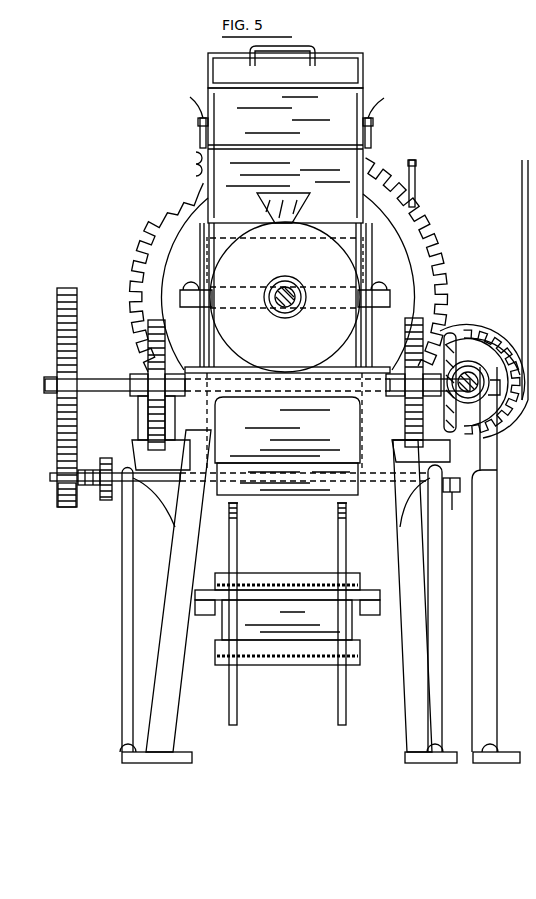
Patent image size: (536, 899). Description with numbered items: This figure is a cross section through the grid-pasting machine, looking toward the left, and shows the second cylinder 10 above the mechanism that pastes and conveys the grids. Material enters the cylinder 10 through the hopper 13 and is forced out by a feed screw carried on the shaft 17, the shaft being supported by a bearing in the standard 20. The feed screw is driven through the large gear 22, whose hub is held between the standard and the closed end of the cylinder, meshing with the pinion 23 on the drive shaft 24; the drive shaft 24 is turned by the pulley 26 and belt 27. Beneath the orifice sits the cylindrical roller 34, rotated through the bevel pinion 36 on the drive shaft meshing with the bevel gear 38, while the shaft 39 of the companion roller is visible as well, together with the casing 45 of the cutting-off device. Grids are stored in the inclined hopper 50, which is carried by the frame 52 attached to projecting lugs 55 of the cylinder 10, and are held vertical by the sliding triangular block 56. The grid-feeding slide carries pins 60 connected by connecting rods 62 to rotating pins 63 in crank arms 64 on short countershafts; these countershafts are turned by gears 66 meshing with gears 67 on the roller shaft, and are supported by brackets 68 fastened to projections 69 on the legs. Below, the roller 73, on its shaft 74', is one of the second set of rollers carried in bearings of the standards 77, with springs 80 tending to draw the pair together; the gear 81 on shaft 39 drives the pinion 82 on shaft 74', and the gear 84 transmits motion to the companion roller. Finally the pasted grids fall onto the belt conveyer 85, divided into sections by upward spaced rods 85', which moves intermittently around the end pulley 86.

The second cylinder 10 is at (285, 297).
The hopper 13 is at (300, 206).
The shaft 17 is at (292, 288).
The standard 20 is at (497, 538).
The large gear 22 is at (160, 215).
The pinion 23 is at (470, 330).
The drive shaft 24 is at (476, 390).
The pulley 26 is at (489, 328).
The belt 27 is at (417, 170).
The cylindrical roller 34 is at (287, 430).
The bevel pinion 36 is at (472, 372).
The bevel gear 38 is at (457, 408).
The shaft 39 is at (45, 385).
The casing 45 is at (213, 258).
The inclined hopper 50 is at (285, 155).
The frame 52 is at (196, 163).
The projecting lugs 55 is at (190, 300).
The sliding triangular block 56 is at (285, 67).
The pins 60 is at (192, 99).
The connecting rods 62 is at (199, 125).
The rotating pins 63 is at (147, 337).
The crank arms 64 is at (150, 352).
The gears 66 is at (150, 376).
The gears 67 is at (281, 491).
The brackets 68 is at (148, 428).
The projections 69 is at (138, 447).
The roller 73 is at (294, 496).
The shaft 74' is at (99, 470).
The standards 77 is at (121, 650).
The springs 80 is at (88, 488).
The gear 81 is at (57, 340).
The pinion 82 is at (60, 506).
The gear 84 is at (106, 502).
The belt conveyer 85 is at (287, 614).
The spaced rods 85' is at (287, 532).
The end pulley 86 is at (287, 619).